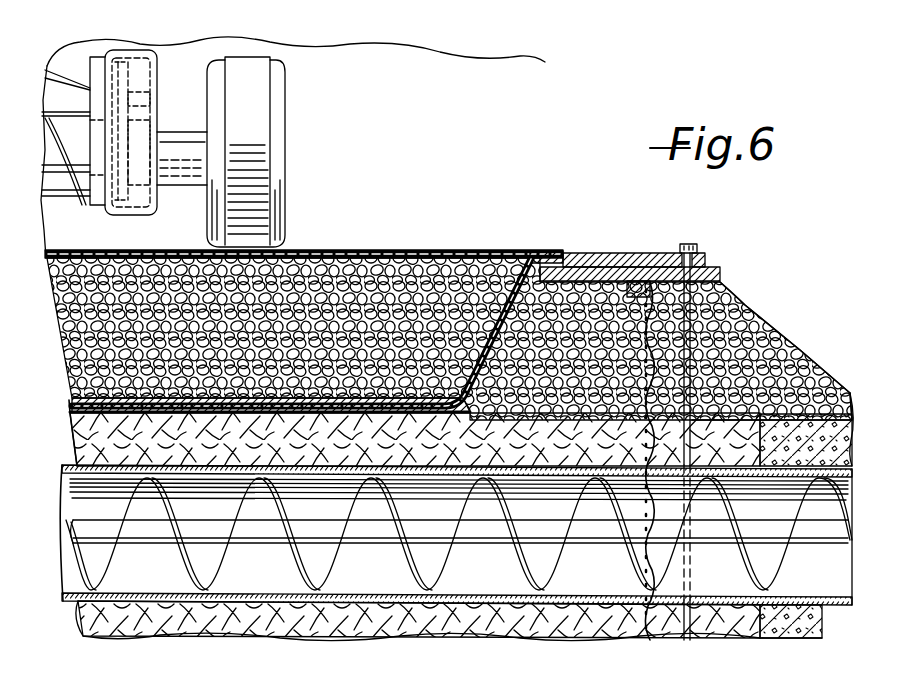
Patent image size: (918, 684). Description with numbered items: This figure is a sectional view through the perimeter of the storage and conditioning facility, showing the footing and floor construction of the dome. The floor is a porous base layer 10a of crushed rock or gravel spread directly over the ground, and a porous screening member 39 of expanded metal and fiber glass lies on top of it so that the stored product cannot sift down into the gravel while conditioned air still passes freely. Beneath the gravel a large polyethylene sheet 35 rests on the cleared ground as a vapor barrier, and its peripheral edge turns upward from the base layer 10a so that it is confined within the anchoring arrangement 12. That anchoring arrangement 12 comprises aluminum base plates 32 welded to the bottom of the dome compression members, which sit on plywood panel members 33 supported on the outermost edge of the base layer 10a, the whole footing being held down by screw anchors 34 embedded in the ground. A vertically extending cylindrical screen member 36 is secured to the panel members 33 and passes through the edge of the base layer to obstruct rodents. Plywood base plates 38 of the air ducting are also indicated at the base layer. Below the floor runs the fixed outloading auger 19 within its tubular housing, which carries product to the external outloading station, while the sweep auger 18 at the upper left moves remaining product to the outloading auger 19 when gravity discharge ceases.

The sweep auger 18 is at (190, 58).
The base layer 10a is at (352, 292).
The porous screening member 39 is at (484, 243).
The base plates 32 is at (668, 252).
The anchoring arrangement 12 is at (742, 246).
The panel members 33 is at (720, 275).
The screw anchors 34 is at (712, 332).
The cylindrical screen member 36 is at (648, 395).
The base plates 38 is at (69, 403).
The polyethylene sheet 35 is at (461, 429).
The outloading auger 19 is at (262, 568).